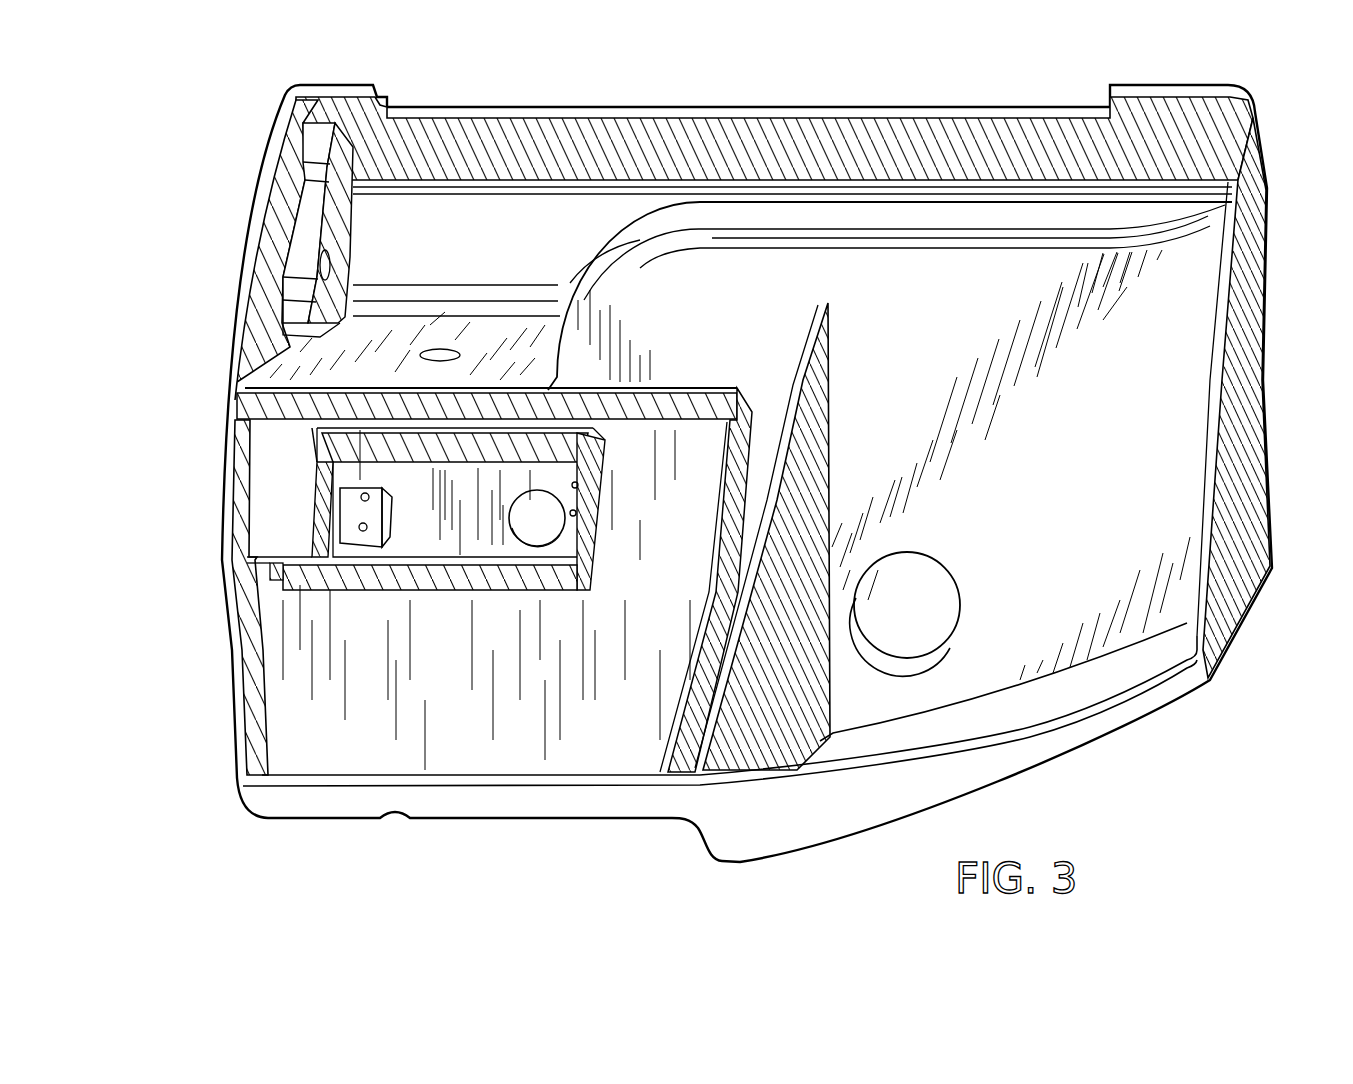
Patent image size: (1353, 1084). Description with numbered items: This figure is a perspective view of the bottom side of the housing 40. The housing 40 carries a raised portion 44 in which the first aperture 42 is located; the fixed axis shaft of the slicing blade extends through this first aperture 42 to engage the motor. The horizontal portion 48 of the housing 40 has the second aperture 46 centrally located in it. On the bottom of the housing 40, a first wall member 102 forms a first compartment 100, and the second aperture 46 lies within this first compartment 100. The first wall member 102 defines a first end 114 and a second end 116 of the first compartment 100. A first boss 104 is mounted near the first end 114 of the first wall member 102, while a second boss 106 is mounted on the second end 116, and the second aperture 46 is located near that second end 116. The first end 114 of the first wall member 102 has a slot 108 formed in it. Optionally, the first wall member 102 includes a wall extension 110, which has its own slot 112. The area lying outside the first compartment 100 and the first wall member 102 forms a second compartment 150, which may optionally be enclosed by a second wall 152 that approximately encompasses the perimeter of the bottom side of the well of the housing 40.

The housing 40 is at (223, 168).
The first aperture 42 is at (957, 566).
The raised portion 44 is at (1178, 380).
The second aperture 46 is at (540, 537).
The horizontal portion 48 is at (495, 828).
The first compartment 100 is at (432, 523).
The first wall member 102 is at (425, 582).
The first boss 104 is at (367, 548).
The second boss 106 is at (598, 518).
The slot 108 is at (317, 497).
The wall extension 110 is at (255, 580).
The slot 112 is at (270, 560).
The first end 114 is at (312, 450).
The second end 116 is at (597, 398).
The second compartment 150 is at (627, 720).
The second wall 152 is at (692, 392).